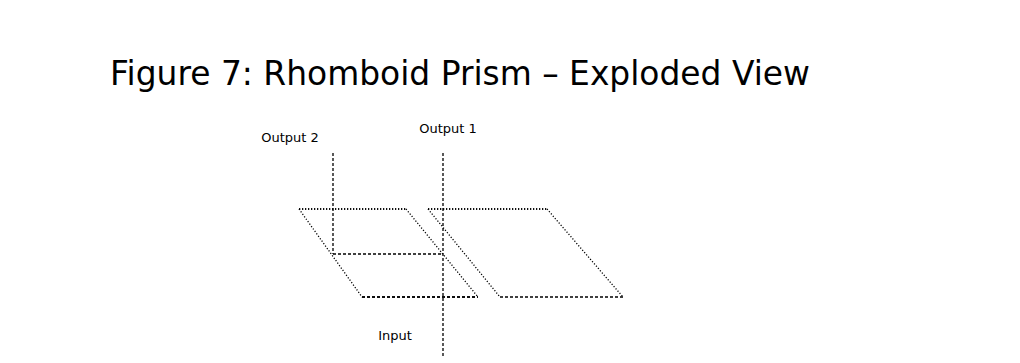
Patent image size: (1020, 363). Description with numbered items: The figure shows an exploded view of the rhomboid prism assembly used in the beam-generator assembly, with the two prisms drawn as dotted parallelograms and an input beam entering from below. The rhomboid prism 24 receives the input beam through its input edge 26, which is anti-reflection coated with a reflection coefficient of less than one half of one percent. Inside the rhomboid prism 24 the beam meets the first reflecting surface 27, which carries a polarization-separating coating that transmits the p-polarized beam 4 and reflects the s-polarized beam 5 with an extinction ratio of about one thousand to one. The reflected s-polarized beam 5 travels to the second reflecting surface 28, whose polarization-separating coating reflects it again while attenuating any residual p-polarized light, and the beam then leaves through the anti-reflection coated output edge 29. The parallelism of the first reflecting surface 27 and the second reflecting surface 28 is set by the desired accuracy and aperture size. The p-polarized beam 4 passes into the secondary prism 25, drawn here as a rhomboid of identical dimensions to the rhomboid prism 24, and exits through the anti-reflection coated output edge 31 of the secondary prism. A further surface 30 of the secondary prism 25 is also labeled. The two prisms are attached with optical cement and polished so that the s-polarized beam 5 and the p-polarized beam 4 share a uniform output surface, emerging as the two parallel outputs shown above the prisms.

The p-polarized beam 4 is at (429, 167).
The s-polarized beam 5 is at (319, 175).
The rhomboid prism 24 is at (366, 266).
The secondary prism 25 is at (546, 283).
The input edge 26 is at (435, 288).
The first reflecting surface 27 is at (455, 248).
The second reflecting surface 28 is at (305, 237).
The output edge 29 is at (345, 213).
The output surface of second prism 30 is at (476, 200).
The output edge of the secondary prism 31 is at (463, 229).